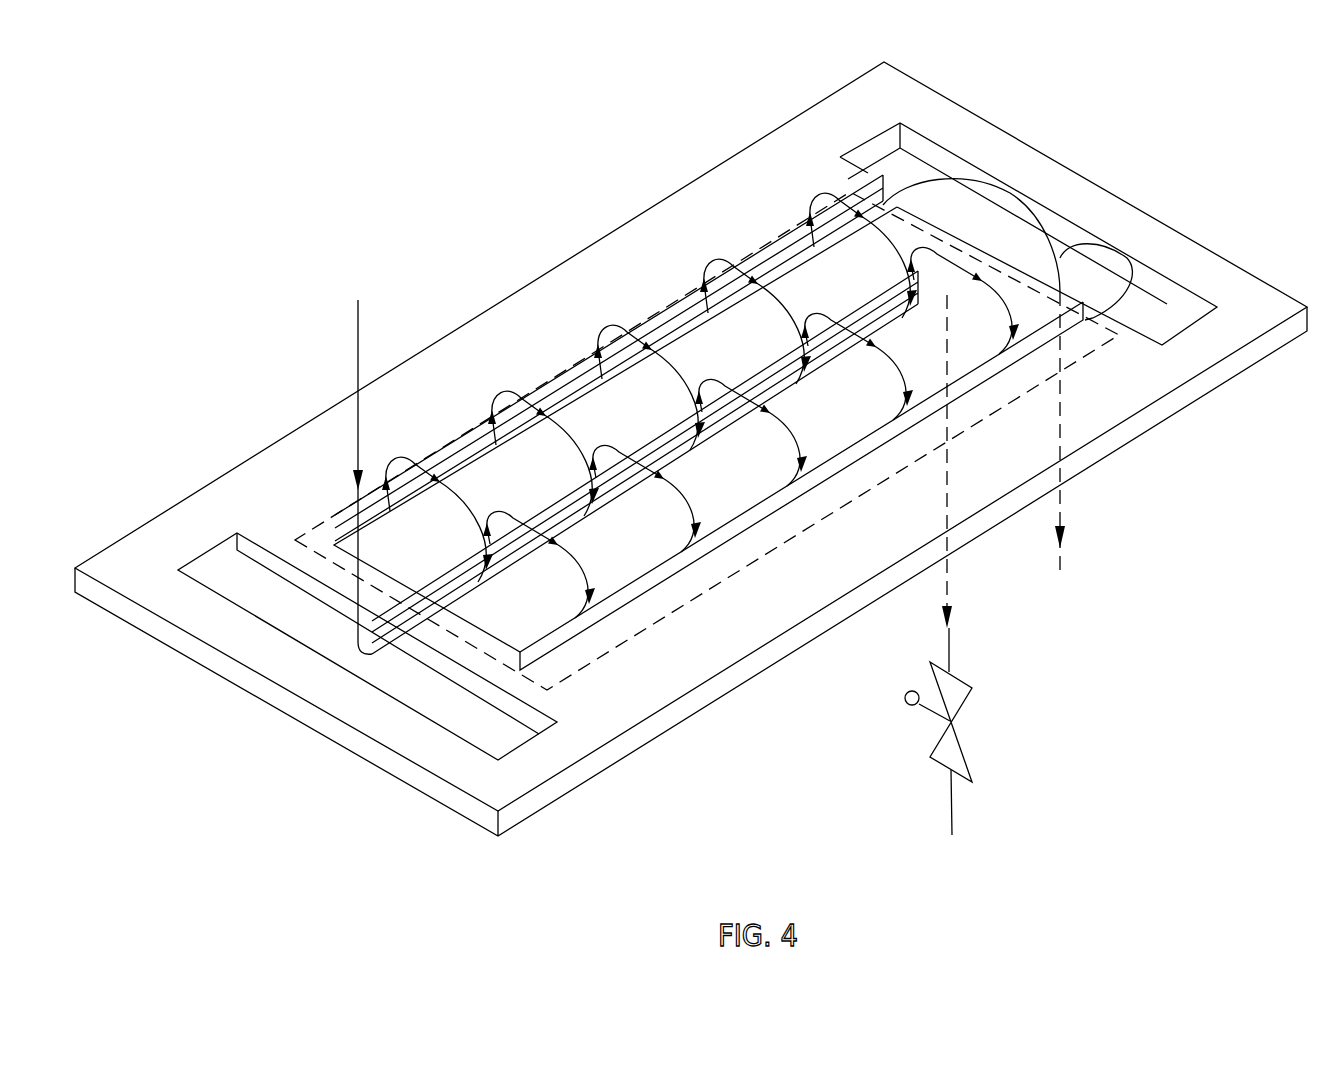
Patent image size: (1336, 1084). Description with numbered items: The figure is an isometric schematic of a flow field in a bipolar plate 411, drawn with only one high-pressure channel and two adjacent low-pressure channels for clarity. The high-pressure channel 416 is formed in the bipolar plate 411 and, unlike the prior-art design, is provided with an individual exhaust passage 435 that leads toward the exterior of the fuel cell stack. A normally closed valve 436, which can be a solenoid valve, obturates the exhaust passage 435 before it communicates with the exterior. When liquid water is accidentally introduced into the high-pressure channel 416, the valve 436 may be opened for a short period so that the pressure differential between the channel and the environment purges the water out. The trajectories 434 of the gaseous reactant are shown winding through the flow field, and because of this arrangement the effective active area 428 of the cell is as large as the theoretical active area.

The bipolar plate 411 is at (380, 757).
The high-pressure channel 416 is at (560, 663).
The effective active area 428 is at (667, 307).
The trajectories 434 is at (745, 278).
The individual exhaust passage 435 is at (950, 310).
The normally closed valve 436 is at (953, 723).